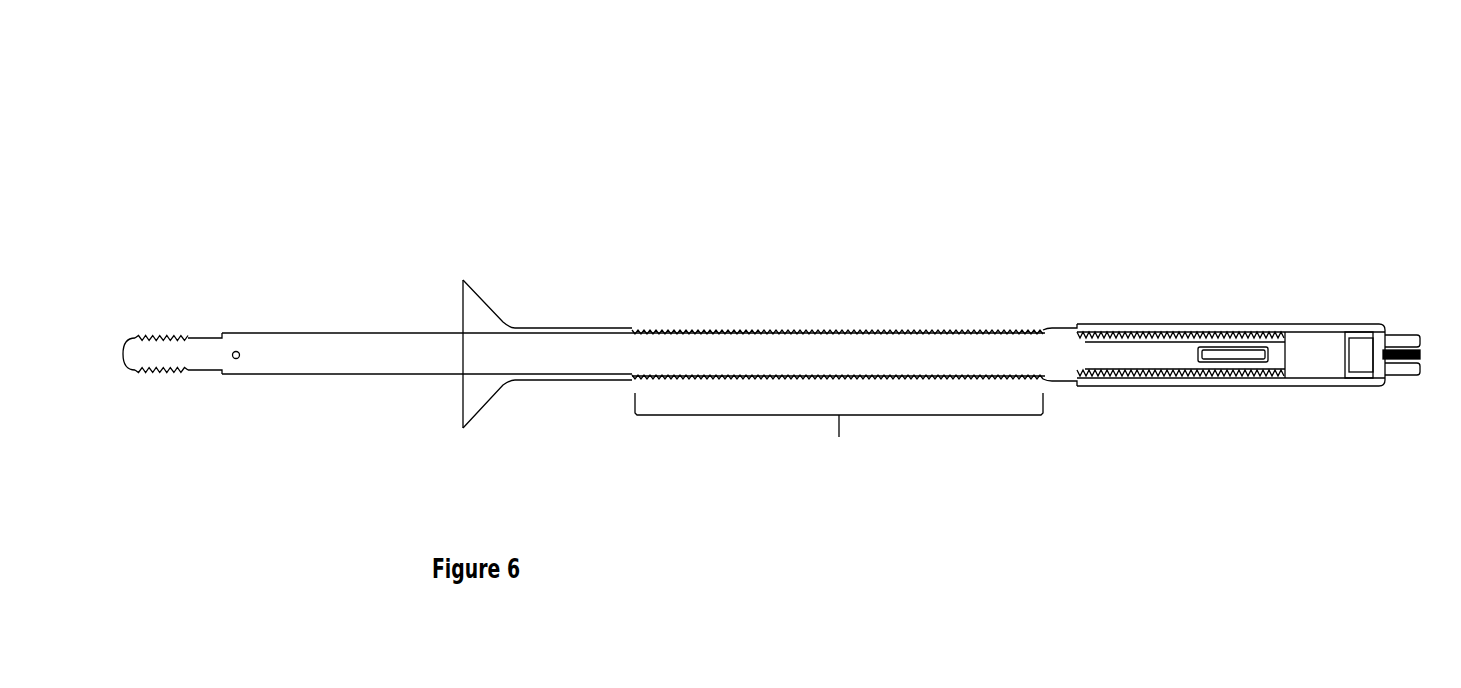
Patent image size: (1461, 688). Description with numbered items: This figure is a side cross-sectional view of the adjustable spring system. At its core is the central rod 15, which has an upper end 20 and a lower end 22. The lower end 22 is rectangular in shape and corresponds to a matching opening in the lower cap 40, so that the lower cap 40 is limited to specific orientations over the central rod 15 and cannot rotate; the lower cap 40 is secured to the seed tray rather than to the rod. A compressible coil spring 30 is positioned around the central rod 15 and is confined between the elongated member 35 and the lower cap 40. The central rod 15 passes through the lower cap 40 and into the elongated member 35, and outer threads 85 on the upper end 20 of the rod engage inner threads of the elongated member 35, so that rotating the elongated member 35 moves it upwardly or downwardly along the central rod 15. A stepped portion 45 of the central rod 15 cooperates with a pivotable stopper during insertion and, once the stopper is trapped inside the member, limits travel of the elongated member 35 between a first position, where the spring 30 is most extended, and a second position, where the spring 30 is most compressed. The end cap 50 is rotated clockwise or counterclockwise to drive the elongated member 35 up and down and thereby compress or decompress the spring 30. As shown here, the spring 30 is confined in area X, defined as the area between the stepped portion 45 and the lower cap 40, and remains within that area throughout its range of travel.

The central rod 15 is at (358, 311).
The lower end 22 is at (272, 365).
The lower cap 40 is at (488, 312).
The spring 30 is at (850, 332).
The stepped portion 45 is at (1053, 327).
The upper end 20 is at (1165, 352).
The outer threads 85 is at (1150, 376).
The elongated member 35 is at (1308, 387).
The end cap 50 is at (1408, 333).